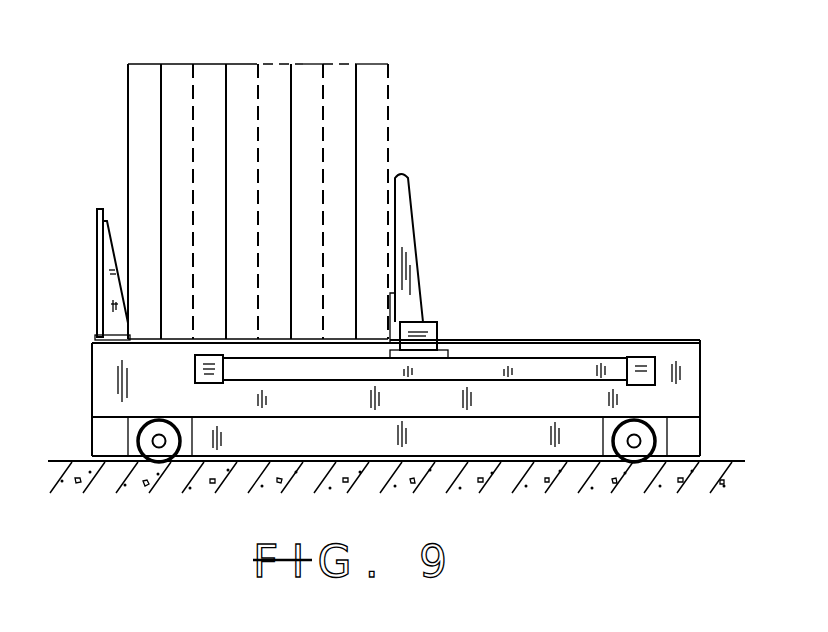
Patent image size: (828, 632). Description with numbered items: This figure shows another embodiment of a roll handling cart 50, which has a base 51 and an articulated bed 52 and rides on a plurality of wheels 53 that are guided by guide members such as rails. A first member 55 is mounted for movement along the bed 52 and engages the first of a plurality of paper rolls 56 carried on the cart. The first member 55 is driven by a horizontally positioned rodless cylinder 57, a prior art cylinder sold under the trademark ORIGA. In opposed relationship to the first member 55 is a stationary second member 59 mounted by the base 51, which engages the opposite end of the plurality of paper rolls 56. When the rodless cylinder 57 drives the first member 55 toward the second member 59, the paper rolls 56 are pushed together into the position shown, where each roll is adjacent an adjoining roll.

The roll handling cart 50 is at (588, 339).
The base 51 is at (523, 418).
The articulated bed 52 is at (478, 340).
The wheels 53 is at (137, 430).
The first member 55 is at (415, 242).
The paper rolls 56 is at (173, 63).
The rodless cylinder 57 is at (302, 380).
The stationary second member 59 is at (97, 249).